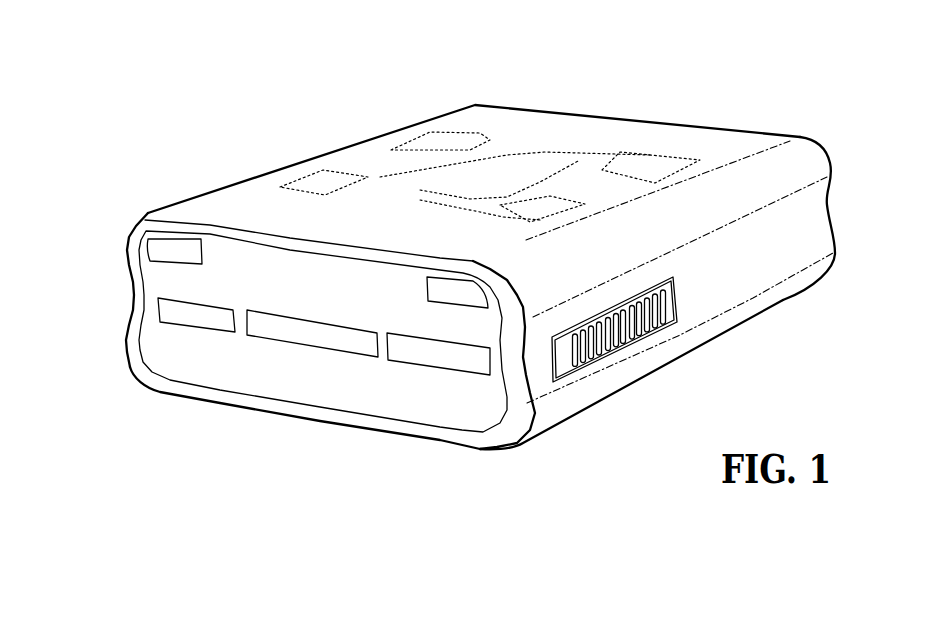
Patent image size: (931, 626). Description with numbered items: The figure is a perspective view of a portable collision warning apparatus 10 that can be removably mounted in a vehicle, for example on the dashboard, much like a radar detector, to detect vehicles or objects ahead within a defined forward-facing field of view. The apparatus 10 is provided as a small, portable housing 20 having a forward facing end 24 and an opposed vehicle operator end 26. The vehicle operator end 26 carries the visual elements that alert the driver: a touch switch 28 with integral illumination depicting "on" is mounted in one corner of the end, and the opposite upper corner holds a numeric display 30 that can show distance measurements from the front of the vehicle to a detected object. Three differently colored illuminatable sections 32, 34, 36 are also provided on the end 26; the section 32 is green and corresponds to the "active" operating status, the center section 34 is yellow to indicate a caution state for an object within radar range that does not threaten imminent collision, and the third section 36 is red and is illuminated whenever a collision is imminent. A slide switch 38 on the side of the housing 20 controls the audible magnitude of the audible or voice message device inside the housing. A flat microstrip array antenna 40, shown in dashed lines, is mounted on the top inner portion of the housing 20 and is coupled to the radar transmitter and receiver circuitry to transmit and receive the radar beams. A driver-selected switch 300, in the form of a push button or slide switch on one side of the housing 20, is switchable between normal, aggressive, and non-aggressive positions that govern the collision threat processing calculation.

The portable collision warning apparatus 10 is at (458, 261).
The housing 20 is at (258, 181).
The forward facing end 24 is at (817, 145).
The vehicle operator end 26 is at (486, 416).
The touch switch 28 is at (160, 250).
The numeric display 30 is at (433, 290).
The illuminatable section 32 is at (200, 322).
The center section 34 is at (303, 338).
The third section 36 is at (427, 364).
The slide switch 38 is at (622, 340).
The flat microstrip array antenna 40 is at (618, 150).
The driver-selected switch 300 is at (137, 307).